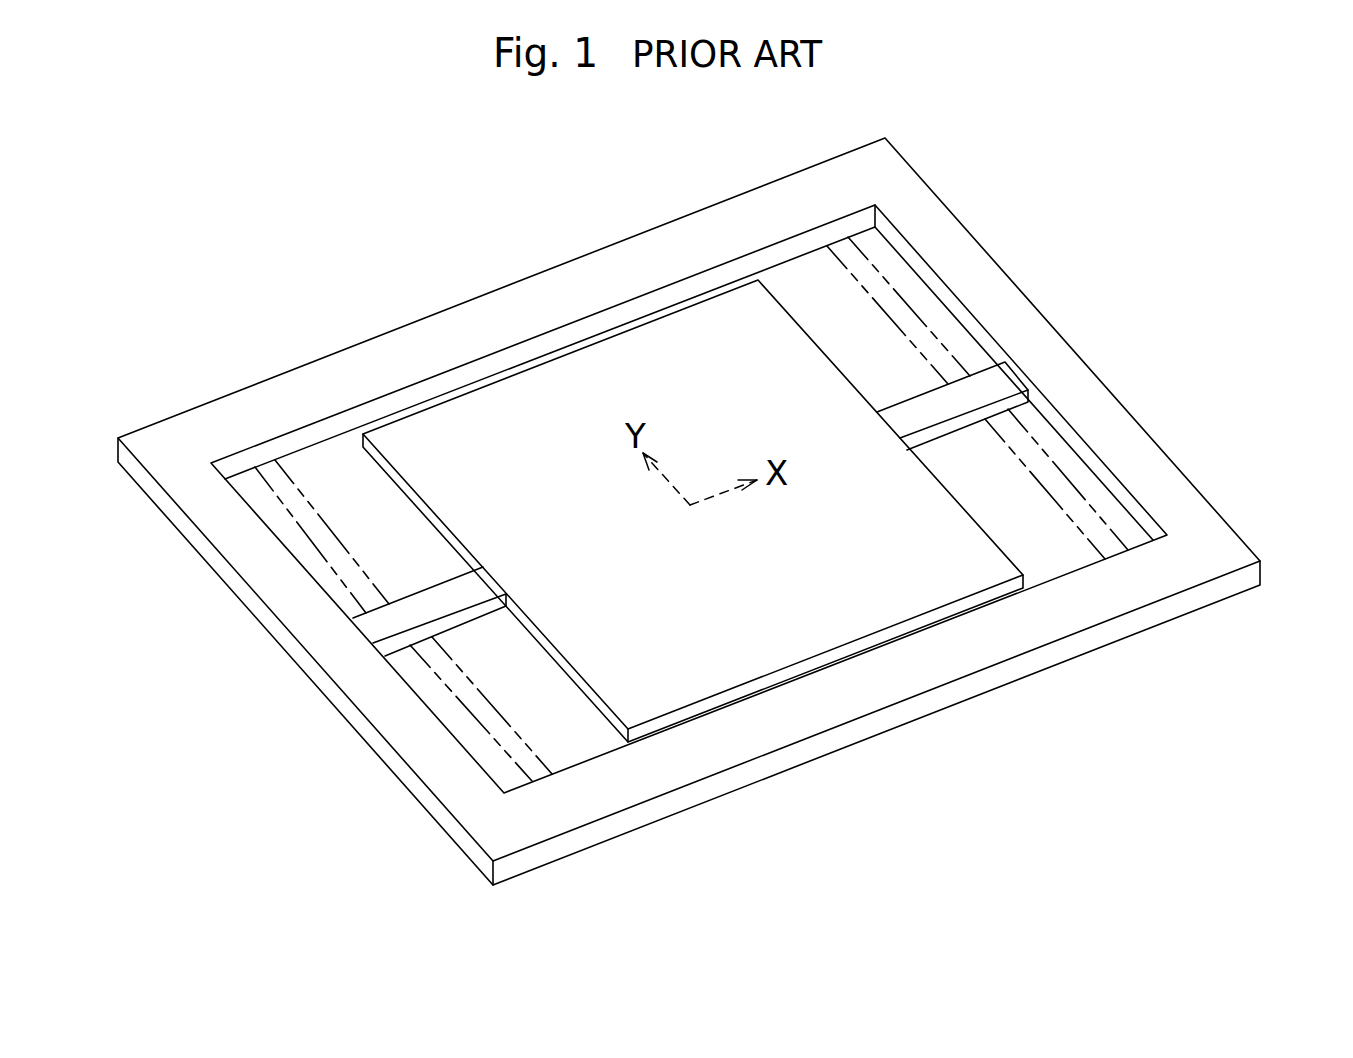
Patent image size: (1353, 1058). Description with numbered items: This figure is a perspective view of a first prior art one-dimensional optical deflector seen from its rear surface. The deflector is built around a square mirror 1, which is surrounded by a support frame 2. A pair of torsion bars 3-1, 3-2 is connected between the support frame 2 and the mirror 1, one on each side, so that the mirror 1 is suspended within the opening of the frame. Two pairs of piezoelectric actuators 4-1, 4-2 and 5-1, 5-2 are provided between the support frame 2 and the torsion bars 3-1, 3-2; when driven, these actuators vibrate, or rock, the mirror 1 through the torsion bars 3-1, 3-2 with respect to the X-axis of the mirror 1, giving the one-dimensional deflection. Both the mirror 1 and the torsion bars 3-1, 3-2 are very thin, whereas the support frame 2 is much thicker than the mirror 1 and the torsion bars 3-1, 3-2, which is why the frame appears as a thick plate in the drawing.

The mirror 1 is at (673, 348).
The support frame 2 is at (884, 172).
The torsion bar 3-1 is at (388, 620).
The torsion bar 3-2 is at (1000, 383).
The piezoelectric actuator 4-1 is at (317, 508).
The piezoelectric actuator 4-2 is at (503, 713).
The piezoelectric actuator 5-1 is at (903, 300).
The piezoelectric actuator 5-2 is at (1055, 472).